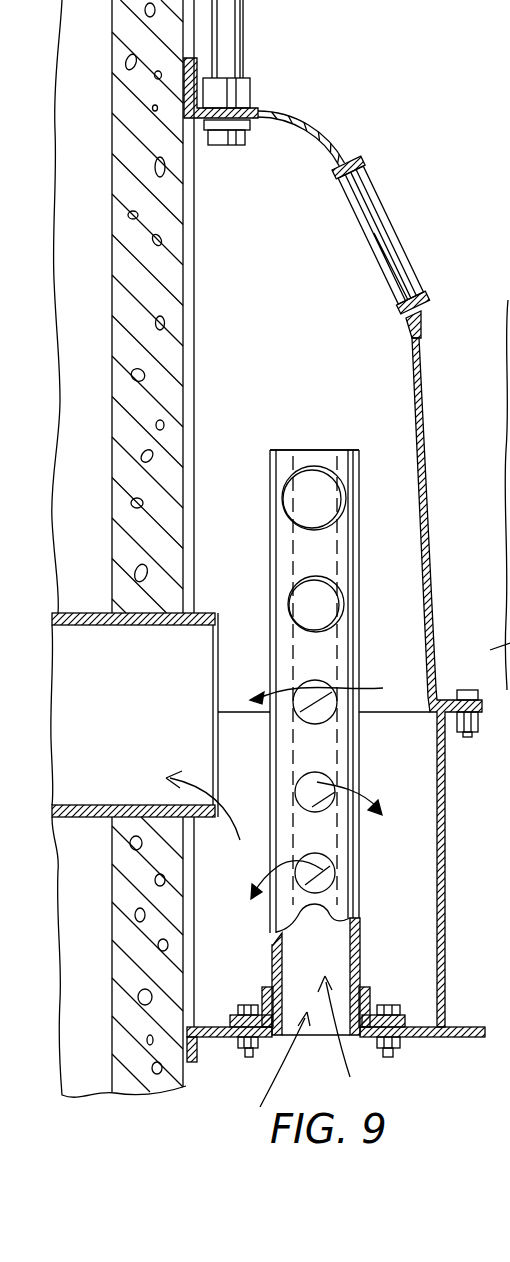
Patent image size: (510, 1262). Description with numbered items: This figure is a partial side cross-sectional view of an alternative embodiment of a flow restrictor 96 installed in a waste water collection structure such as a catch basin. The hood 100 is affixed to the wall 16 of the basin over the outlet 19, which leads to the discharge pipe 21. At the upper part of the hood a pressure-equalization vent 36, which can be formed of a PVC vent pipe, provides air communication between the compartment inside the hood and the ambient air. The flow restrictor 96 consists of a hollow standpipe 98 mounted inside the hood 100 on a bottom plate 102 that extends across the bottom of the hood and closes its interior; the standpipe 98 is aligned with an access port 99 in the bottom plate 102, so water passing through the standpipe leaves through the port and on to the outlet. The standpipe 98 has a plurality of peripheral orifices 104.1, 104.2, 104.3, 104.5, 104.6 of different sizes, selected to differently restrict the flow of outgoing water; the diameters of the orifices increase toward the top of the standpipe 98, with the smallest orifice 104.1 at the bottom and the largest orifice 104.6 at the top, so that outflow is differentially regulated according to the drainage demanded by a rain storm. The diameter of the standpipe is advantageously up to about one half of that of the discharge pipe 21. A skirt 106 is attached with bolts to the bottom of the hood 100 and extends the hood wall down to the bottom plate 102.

The wall 16 is at (163, 277).
The outlet 19 is at (167, 692).
The discharge pipe 21 is at (88, 613).
The pressure-equalization vent 36 is at (236, 62).
The flow restrictor 96 is at (305, 438).
The standpipe 98 is at (270, 553).
The access port 99 is at (355, 1032).
The hood 100 is at (336, 121).
The bottom plate 102 is at (423, 1040).
The peripheral orifice 104.1 is at (328, 872).
The peripheral orifice 104.2 is at (330, 782).
The peripheral orifice 104.3 is at (380, 680).
The peripheral orifice 104.5 is at (313, 604).
The peripheral orifice 104.6 is at (316, 482).
The skirt 106 is at (446, 918).